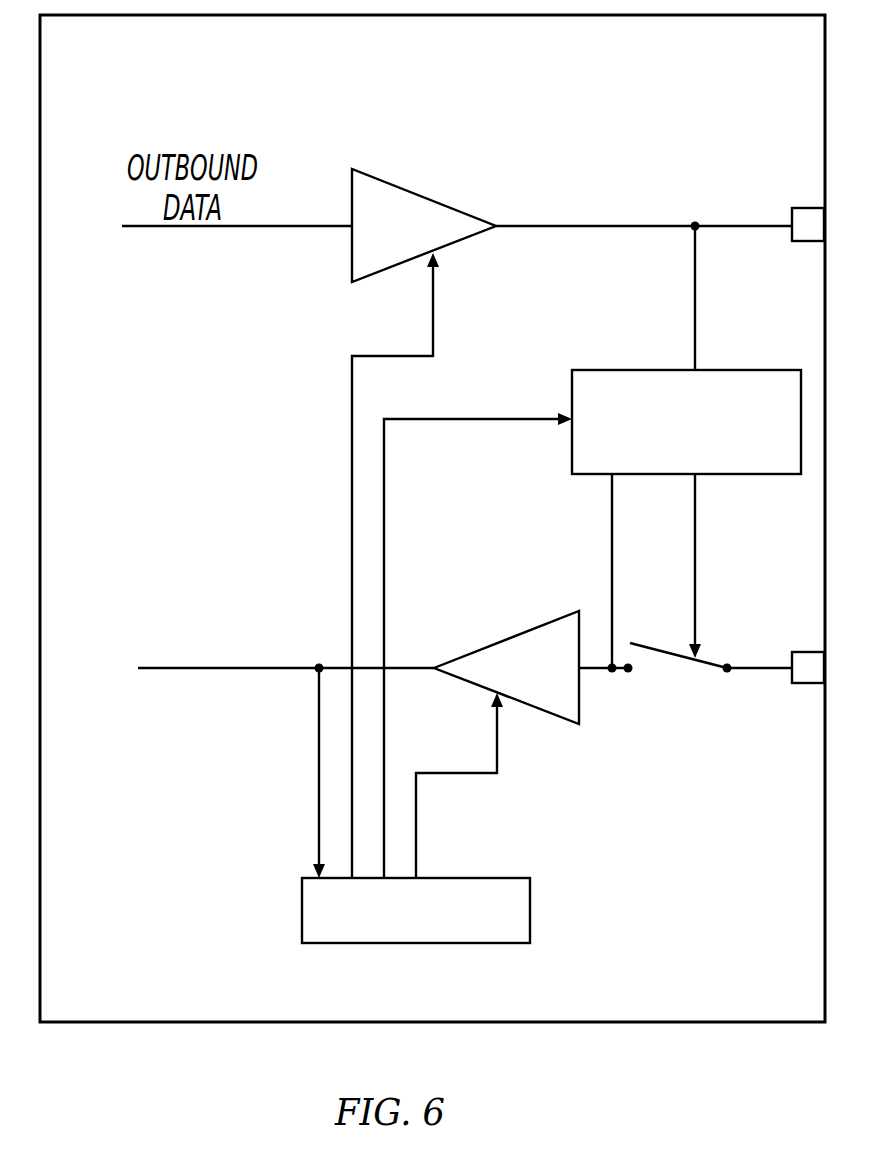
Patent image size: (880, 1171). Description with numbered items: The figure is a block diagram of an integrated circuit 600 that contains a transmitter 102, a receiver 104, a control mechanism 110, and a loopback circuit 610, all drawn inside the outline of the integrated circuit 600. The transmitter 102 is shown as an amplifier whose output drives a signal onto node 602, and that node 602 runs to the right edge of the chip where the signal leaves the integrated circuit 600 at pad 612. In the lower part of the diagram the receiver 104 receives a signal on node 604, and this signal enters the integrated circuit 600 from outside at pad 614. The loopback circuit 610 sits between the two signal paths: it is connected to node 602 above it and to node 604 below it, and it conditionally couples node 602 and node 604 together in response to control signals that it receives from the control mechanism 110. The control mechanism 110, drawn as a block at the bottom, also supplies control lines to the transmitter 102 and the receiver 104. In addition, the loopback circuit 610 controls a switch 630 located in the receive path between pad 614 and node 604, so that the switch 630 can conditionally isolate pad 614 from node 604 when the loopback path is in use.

The integrated circuit 600 is at (743, 1023).
The transmitter 102 is at (418, 193).
The receiver 104 is at (517, 635).
The control mechanism 110 is at (530, 908).
The node 602 is at (630, 224).
The node 604 is at (602, 673).
The loopback circuit 610 is at (753, 370).
The pad 612 is at (812, 208).
The pad 614 is at (808, 683).
The switch 630 is at (712, 660).